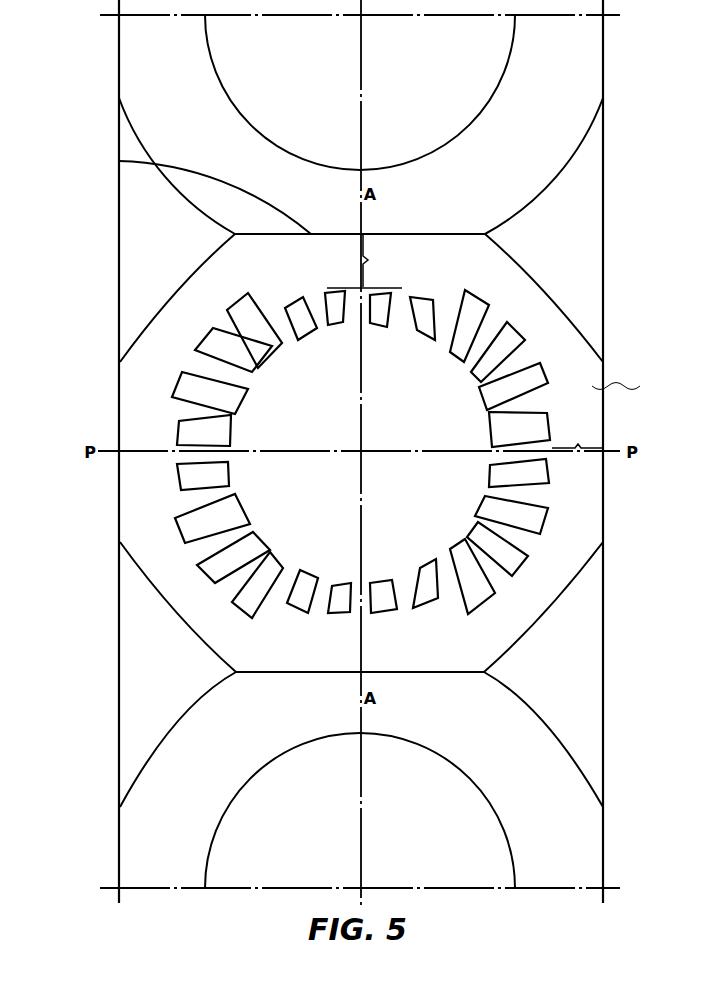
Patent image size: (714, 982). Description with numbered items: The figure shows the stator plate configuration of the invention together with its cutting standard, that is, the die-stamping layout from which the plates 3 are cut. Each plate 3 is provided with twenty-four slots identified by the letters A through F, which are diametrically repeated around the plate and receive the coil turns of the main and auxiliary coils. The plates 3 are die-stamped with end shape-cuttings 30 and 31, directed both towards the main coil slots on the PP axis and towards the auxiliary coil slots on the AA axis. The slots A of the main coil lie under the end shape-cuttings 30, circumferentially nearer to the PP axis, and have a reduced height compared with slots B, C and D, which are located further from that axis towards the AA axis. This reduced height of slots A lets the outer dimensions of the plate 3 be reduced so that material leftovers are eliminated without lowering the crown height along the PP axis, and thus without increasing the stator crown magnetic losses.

The plate 3 is at (523, 593).
The end shape-cutting 30 is at (119, 401).
The end shape-cutting 31 is at (119, 161).